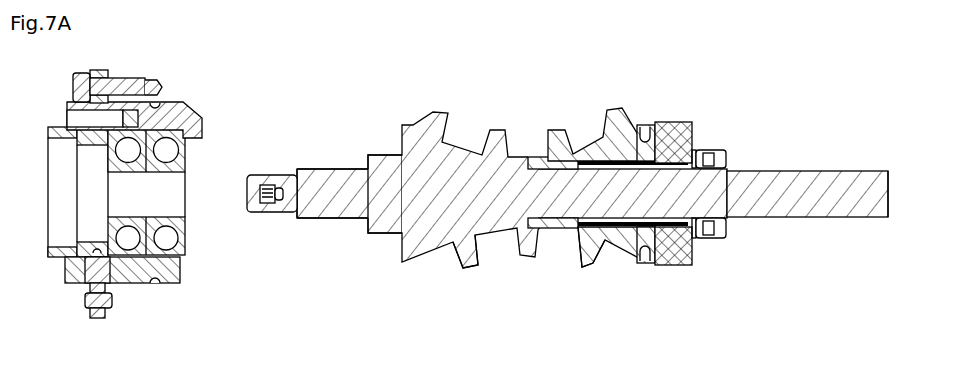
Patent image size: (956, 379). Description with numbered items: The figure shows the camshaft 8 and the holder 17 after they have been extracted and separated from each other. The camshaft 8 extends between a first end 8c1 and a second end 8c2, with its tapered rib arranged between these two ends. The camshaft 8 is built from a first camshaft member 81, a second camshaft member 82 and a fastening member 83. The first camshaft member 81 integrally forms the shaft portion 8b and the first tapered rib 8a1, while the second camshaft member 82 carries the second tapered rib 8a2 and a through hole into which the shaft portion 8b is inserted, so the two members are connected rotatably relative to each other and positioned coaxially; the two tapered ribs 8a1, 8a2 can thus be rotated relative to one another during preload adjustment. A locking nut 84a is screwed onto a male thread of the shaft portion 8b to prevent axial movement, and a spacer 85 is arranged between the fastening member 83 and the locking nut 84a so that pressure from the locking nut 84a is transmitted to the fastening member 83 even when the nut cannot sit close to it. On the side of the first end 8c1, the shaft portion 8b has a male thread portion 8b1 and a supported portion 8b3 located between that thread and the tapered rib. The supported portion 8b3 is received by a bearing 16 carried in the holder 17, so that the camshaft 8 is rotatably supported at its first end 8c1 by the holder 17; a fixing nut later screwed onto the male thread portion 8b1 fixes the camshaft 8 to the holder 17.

The holder 17 is at (178, 57).
The bearing 16 is at (185, 163).
The camshaft 8 is at (710, 86).
The first camshaft member 81 is at (332, 138).
The second camshaft member 82 is at (587, 112).
The shaft portion 8b is at (643, 204).
The male thread portion 8b1 is at (262, 212).
The supported portion 8b3 is at (328, 218).
The first end 8c1 is at (245, 205).
The second end 8c2 is at (890, 202).
The first tapered rib 8a1 is at (470, 267).
The second tapered rib 8a2 is at (585, 270).
The fastening member 83 is at (675, 265).
The locking nut 84a is at (715, 235).
The spacer 85 is at (700, 243).